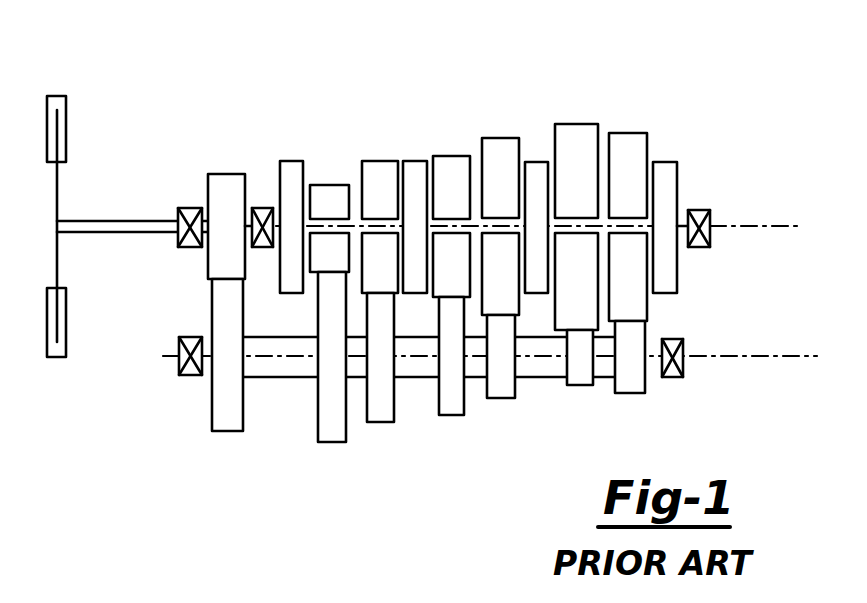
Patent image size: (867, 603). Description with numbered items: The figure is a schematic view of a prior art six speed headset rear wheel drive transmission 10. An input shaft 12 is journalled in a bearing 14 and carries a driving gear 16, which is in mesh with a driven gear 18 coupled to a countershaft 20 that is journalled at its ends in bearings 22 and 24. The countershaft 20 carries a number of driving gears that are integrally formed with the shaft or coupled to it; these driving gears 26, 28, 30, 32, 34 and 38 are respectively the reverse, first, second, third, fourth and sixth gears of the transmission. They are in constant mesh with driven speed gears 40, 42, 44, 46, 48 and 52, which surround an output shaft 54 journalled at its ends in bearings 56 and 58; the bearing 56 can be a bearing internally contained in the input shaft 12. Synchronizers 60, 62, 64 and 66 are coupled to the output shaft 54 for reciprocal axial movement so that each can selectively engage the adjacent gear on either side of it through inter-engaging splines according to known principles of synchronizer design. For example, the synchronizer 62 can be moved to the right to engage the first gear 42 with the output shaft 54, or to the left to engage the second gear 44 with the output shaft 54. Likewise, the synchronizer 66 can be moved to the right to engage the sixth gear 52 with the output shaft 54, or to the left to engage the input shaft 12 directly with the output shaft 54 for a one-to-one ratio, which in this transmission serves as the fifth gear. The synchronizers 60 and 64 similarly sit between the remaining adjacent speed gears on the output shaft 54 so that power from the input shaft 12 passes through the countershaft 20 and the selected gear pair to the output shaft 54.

The headset transmission 10 is at (394, 70).
The input shaft 12 is at (100, 219).
The bearing 14 is at (184, 208).
The driving gear 16 is at (206, 171).
The driven gear 18 is at (210, 419).
The countershaft 20 is at (275, 379).
The bearing 22 is at (178, 365).
The bearing 24 is at (672, 378).
The reverse driving gear 26 is at (628, 394).
The first driving gear 28 is at (578, 386).
The second driving gear 30 is at (500, 399).
The third driving gear 32 is at (448, 416).
The fourth driving gear 34 is at (380, 423).
The sixth driving gear 38 is at (325, 443).
The driven speed gear 40 is at (630, 133).
The first gear 42 is at (580, 124).
The second gear 44 is at (510, 138).
The driven speed gear 46 is at (458, 156).
The driven speed gear 48 is at (380, 161).
The sixth gear 52 is at (328, 185).
The output shaft 54 is at (776, 228).
The bearing 56 is at (260, 208).
The bearing 58 is at (697, 248).
The synchronizer 60 is at (665, 162).
The synchronizer 62 is at (535, 162).
The synchronizer 64 is at (415, 161).
The synchronizer 66 is at (297, 161).